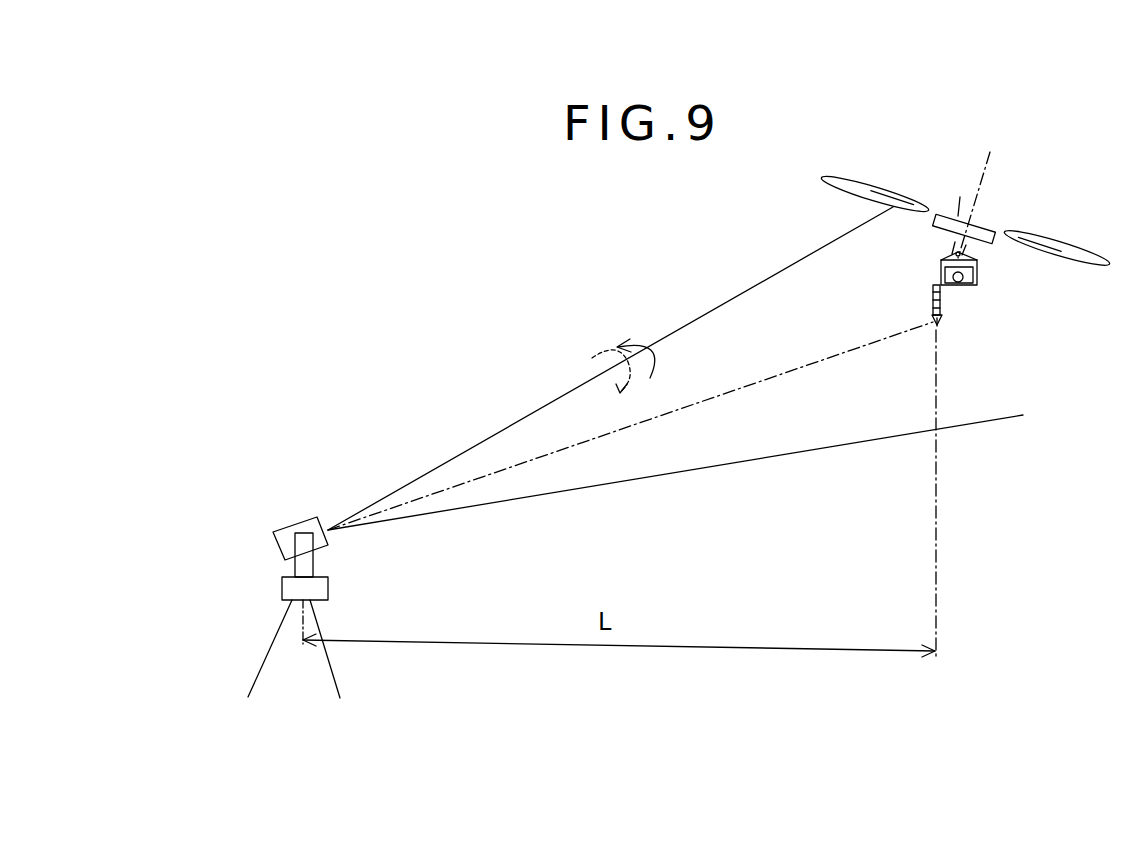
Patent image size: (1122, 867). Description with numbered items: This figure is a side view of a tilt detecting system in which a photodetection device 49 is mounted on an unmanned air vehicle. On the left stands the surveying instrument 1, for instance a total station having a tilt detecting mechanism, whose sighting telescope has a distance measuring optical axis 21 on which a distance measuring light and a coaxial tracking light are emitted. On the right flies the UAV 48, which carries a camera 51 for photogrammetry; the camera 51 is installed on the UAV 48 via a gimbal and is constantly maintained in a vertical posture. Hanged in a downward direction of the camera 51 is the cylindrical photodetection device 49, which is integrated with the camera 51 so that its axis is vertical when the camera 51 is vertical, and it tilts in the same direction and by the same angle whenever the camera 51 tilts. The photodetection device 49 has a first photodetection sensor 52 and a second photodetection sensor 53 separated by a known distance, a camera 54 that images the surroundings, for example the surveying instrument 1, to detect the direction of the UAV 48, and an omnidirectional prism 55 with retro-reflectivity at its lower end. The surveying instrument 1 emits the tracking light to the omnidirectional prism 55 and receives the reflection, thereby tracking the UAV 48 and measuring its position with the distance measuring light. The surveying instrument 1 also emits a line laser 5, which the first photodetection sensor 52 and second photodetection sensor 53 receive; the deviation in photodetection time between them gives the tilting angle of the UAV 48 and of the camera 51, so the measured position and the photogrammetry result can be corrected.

The surveying instrument 1 is at (292, 524).
The line laser 5 is at (710, 312).
The distance measuring optical axis 21 is at (733, 392).
The UAV 48 is at (996, 227).
The photodetection device 49 is at (946, 328).
The camera 51 is at (963, 290).
The first photodetection sensor 52 is at (933, 288).
The second photodetection sensor 53 is at (932, 314).
The camera 54 is at (933, 297).
The omnidirectional prism 55 is at (933, 323).